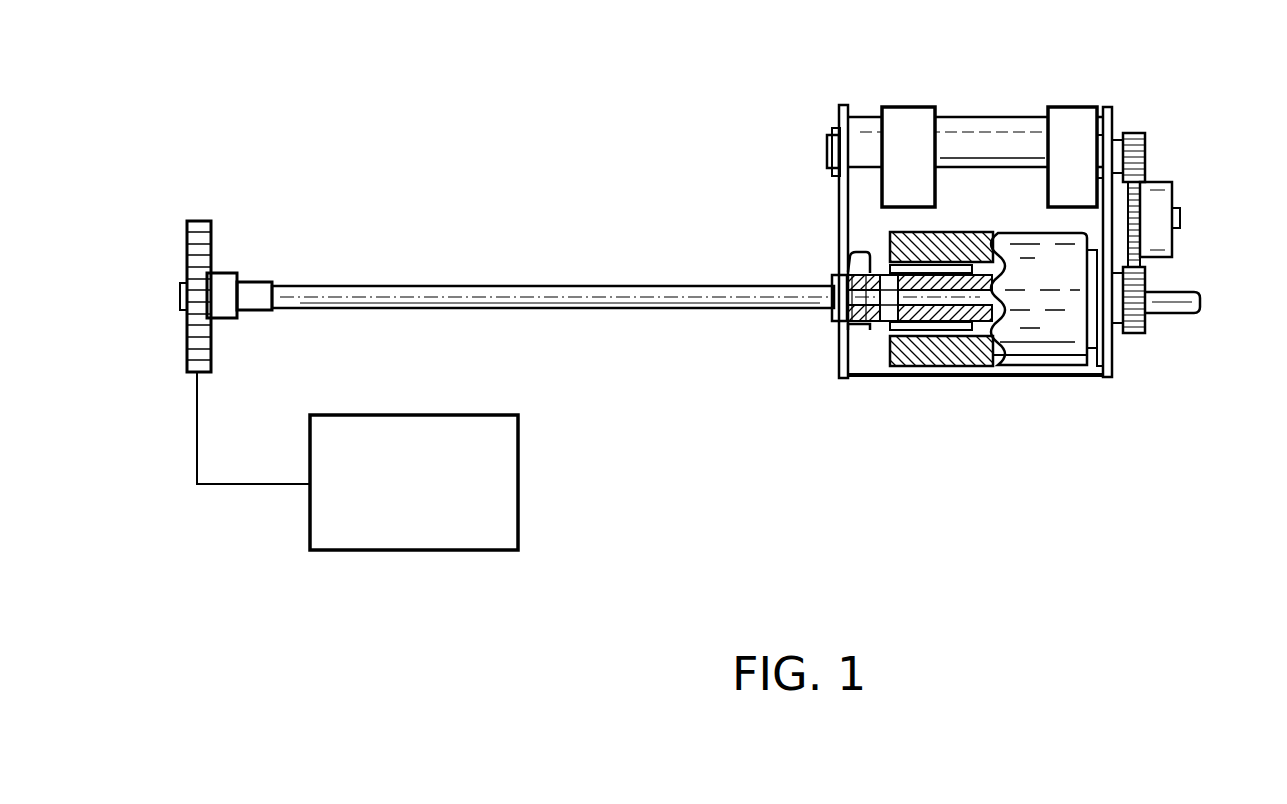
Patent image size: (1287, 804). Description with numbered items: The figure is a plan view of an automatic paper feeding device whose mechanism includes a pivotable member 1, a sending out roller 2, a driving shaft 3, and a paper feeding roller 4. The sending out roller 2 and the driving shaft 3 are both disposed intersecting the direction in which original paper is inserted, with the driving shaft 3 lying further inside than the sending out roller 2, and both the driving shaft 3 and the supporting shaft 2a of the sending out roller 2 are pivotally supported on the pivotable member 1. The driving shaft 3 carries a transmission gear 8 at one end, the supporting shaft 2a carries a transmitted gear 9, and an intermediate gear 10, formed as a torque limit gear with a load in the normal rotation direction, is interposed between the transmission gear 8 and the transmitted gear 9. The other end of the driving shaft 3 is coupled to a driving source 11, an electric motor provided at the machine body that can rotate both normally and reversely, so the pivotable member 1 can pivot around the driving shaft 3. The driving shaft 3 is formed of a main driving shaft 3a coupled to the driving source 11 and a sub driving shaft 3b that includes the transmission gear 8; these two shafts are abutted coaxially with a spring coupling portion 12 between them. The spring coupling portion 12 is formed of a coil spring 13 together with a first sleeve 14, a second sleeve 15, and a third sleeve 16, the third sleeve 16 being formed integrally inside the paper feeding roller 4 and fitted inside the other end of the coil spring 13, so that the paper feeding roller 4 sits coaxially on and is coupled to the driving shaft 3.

The pivotable member 1 is at (838, 202).
The sending out roller 2 is at (905, 122).
The supporting shaft 2a is at (980, 160).
The driving shaft 3 is at (632, 404).
The main driving shaft 3a is at (778, 310).
The sub driving shaft 3b is at (920, 377).
The paper feeding roller 4 is at (996, 309).
The transmission gear 8 is at (1148, 333).
The transmitted gear 9 is at (1148, 157).
The intermediate gear 10 is at (1158, 197).
The driving source 11 is at (503, 437).
The spring coupling portion 12 is at (930, 243).
The coil spring 13 is at (848, 258).
The first sleeve 14 is at (870, 325).
The second sleeve 15 is at (910, 300).
The third sleeve 16 is at (978, 252).